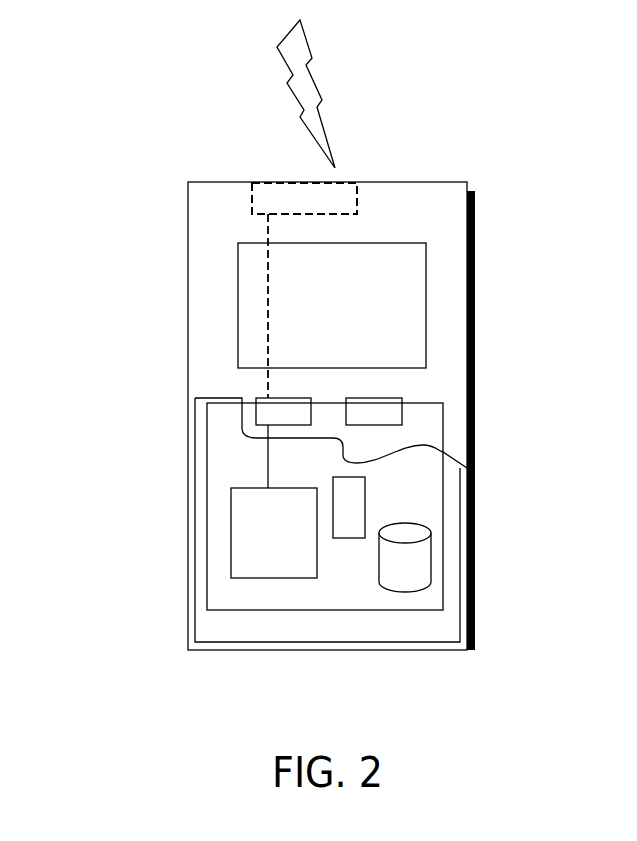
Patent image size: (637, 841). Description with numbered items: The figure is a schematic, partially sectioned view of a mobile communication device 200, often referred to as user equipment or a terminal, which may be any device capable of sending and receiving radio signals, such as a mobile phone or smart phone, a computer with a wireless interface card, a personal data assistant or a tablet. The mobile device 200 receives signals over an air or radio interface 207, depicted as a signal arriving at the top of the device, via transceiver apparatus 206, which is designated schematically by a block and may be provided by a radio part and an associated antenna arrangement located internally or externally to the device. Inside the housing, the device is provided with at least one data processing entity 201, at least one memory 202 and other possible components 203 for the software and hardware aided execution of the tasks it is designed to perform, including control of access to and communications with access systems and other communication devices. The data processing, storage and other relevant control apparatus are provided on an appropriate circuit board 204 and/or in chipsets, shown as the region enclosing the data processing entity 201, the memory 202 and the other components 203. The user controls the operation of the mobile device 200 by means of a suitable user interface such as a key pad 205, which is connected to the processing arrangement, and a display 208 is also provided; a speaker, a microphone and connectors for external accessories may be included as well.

The communication device 200 is at (188, 220).
The data processing entity 201 is at (237, 517).
The memory 202 is at (400, 568).
The other possible components 203 is at (347, 493).
The circuit board 204 is at (230, 593).
The key pad 205 is at (260, 416).
The transceiver apparatus 206 is at (357, 196).
The air or radio interface 207 is at (333, 117).
The display 208 is at (253, 293).